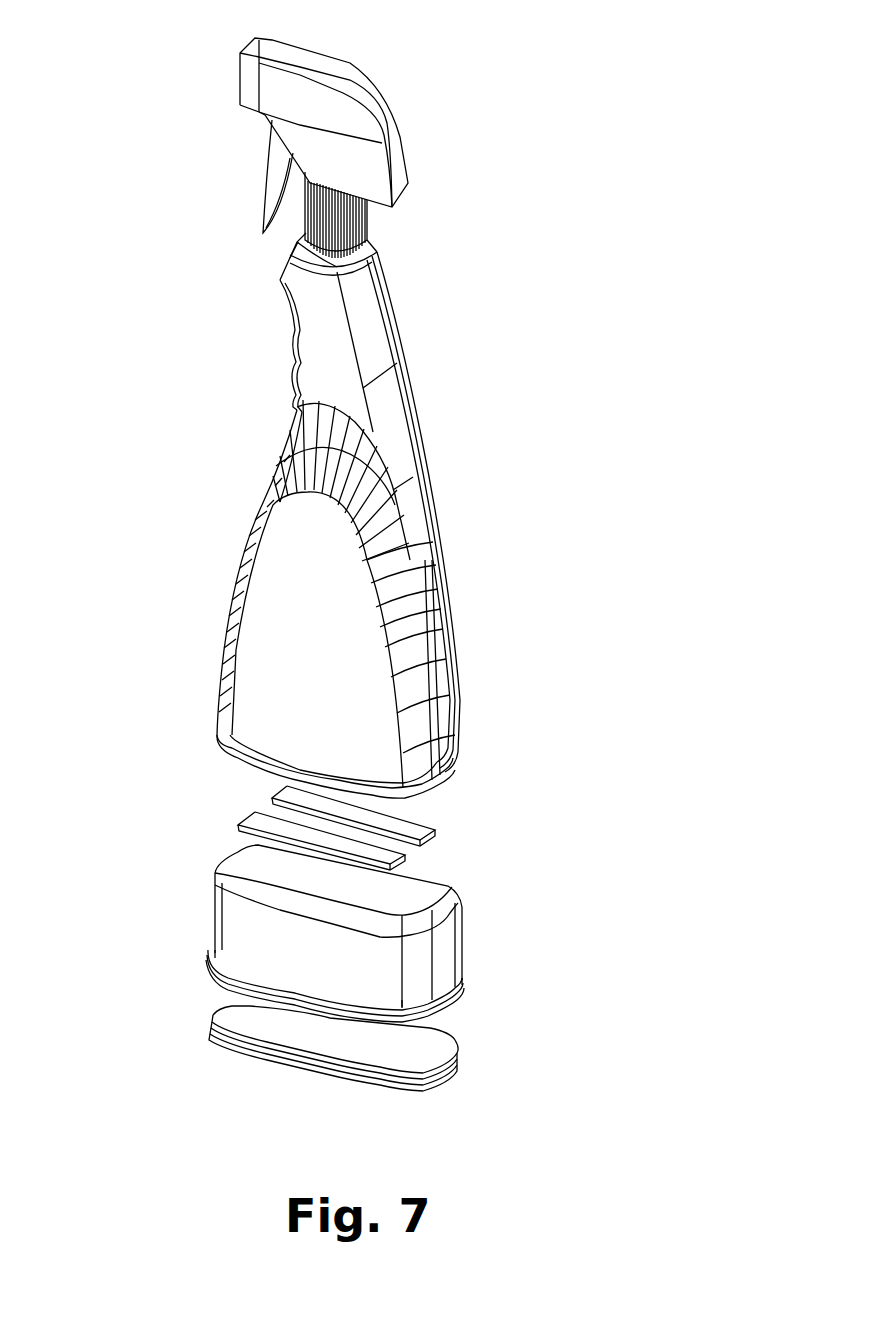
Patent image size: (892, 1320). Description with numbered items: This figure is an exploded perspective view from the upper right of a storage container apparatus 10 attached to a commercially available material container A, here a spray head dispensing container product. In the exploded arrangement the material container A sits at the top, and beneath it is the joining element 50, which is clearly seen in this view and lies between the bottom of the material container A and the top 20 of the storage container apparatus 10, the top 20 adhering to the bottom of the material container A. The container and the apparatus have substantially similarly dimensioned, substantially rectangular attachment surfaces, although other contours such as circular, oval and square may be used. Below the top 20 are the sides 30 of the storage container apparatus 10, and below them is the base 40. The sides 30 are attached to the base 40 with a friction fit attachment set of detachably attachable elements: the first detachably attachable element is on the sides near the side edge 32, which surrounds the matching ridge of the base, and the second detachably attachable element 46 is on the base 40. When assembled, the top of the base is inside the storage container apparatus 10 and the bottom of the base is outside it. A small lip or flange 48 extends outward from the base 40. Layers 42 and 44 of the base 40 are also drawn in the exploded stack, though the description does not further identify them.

The material container A is at (478, 480).
The storage container apparatus 10 is at (366, 949).
The top 20 is at (430, 887).
The sides 30 is at (443, 970).
The side edge 32 is at (437, 1007).
The base 40 is at (338, 1051).
The top plate layer 42 is at (245, 1000).
The bottom plate layer 44 is at (247, 1066).
The second detachably attachable element 46 is at (208, 1040).
The lip or flange 48 is at (208, 1030).
The joining element 50 is at (425, 828).